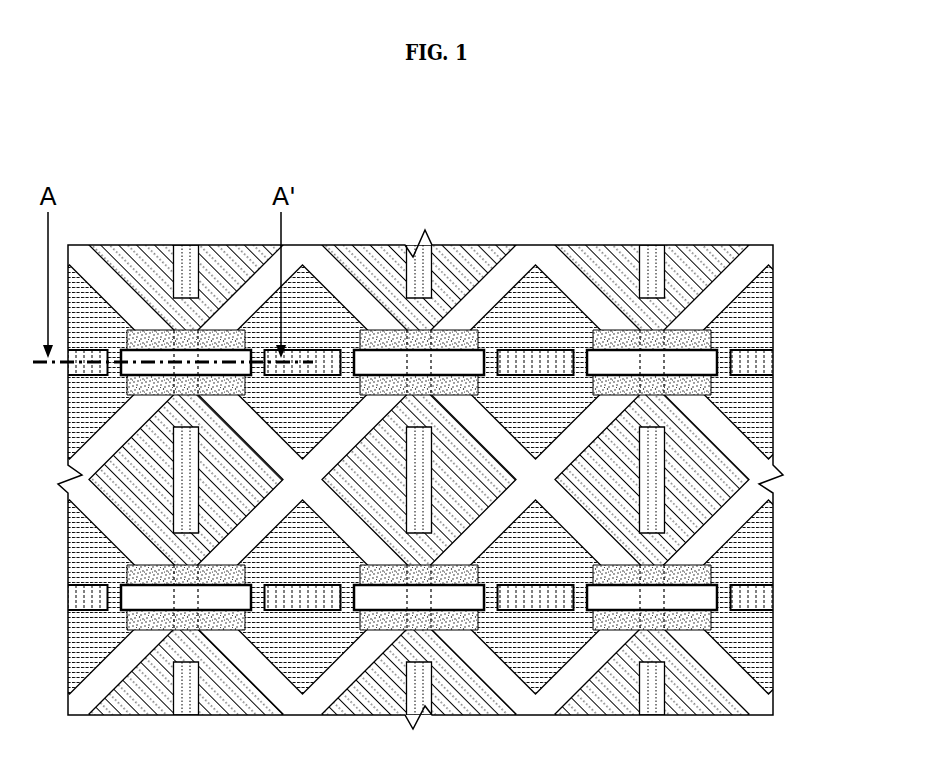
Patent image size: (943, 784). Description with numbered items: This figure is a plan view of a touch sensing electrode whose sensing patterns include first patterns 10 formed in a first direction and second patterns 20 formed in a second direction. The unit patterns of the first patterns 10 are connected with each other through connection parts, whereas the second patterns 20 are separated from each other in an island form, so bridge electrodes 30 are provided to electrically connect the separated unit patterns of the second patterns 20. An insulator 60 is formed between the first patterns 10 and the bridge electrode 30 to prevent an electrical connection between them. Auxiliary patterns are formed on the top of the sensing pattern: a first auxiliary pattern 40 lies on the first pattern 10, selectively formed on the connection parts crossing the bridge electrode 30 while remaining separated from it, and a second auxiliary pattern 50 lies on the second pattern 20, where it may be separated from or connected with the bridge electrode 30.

The first pattern 10 is at (690, 268).
The second pattern 20 is at (538, 295).
The bridge electrode 30 is at (708, 363).
The first auxiliary pattern 40 is at (420, 246).
The second auxiliary pattern 50 is at (522, 355).
The insulator 60 is at (612, 340).